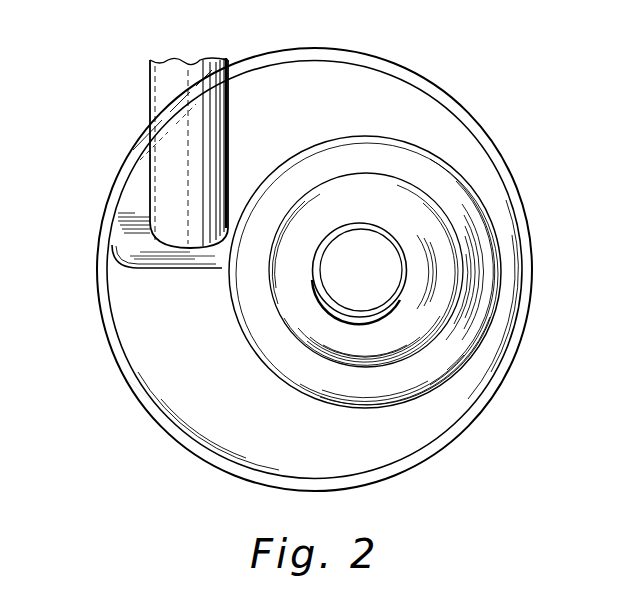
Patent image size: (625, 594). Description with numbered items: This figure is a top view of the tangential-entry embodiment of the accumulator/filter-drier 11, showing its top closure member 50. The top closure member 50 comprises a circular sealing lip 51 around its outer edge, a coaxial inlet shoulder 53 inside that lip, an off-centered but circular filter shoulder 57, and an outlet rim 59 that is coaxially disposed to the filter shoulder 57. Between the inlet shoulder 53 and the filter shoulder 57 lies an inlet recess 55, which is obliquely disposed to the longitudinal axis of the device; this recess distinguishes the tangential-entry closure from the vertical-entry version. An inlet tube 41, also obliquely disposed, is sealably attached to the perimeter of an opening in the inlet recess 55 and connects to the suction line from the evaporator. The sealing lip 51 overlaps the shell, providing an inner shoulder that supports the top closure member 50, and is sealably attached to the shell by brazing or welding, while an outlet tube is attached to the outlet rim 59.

The drain tube assembly 11 is at (190, 37).
The inlet tube 41 is at (230, 128).
The top closure member 50 is at (493, 126).
The circular sealing lip 51 is at (533, 274).
The coaxial inlet shoulder 53 is at (141, 386).
The inlet recess 55 is at (112, 250).
The filter shoulder 57 is at (453, 378).
The outlet rim 59 is at (370, 223).